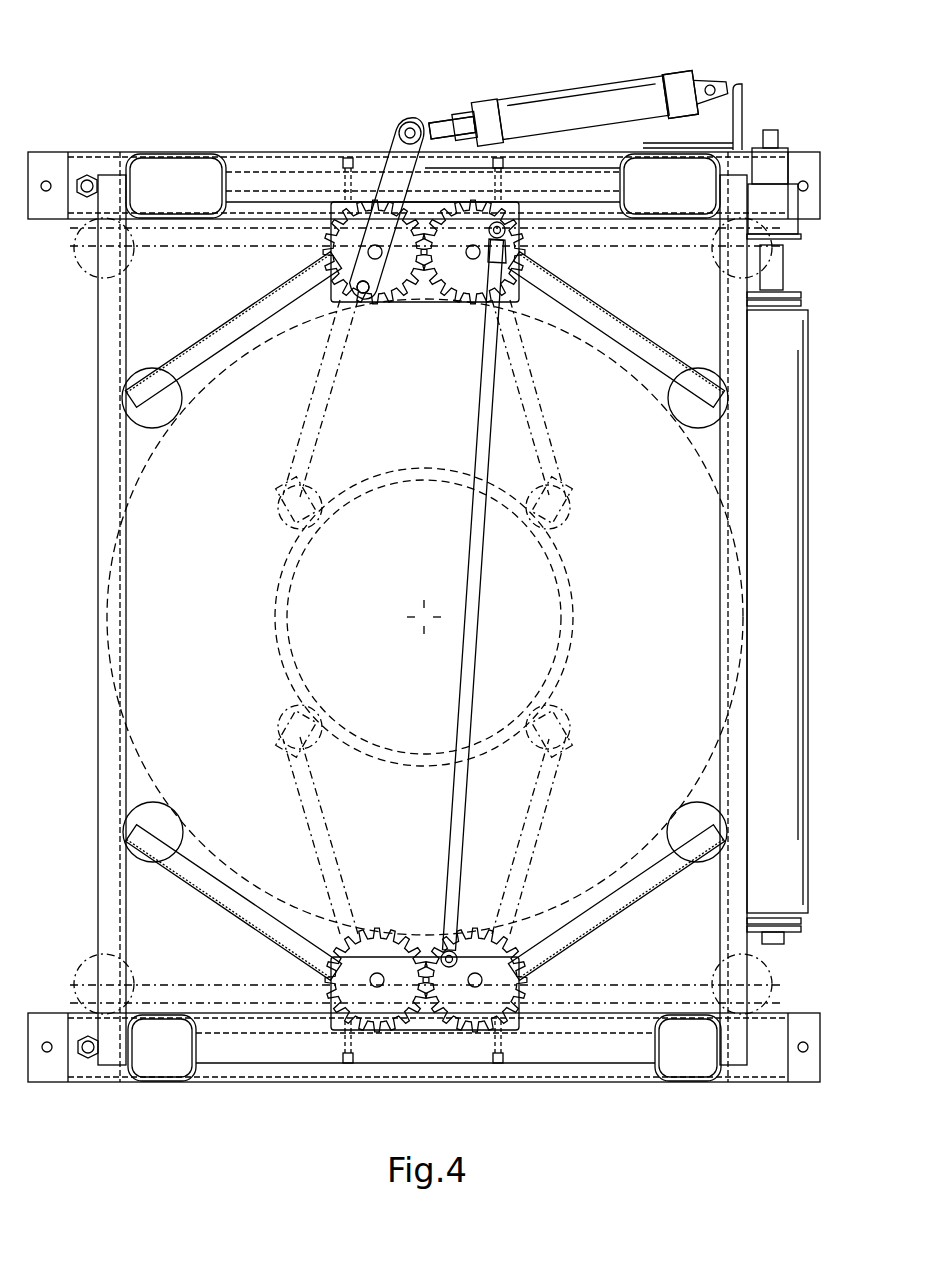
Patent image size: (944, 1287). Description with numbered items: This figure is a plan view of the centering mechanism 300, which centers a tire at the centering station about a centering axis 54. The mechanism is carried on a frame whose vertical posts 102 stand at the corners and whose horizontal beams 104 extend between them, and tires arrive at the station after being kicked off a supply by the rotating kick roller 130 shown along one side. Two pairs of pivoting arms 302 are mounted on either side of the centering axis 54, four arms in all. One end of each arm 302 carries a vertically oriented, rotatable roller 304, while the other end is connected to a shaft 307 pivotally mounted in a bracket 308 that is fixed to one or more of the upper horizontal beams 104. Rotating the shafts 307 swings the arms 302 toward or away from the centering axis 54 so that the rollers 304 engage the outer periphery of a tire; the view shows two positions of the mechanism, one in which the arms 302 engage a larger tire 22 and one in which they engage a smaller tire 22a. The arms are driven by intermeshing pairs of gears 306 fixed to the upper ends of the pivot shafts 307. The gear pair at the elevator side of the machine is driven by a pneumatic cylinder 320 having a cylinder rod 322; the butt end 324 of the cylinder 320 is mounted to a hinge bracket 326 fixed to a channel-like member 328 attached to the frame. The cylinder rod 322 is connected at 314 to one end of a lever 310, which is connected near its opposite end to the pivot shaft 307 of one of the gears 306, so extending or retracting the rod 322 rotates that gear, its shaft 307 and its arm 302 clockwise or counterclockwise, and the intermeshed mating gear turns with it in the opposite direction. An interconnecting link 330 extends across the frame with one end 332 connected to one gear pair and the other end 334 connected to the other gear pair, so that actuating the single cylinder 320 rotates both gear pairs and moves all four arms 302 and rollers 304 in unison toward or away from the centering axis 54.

The centering mechanism 300 is at (372, 60).
The tire 22 is at (425, 617).
The tire 22a is at (270, 625).
The centering axis 54 is at (422, 615).
The vertical posts 102 is at (180, 200).
The horizontal beams 104 is at (275, 190).
The kick roller 130 is at (790, 852).
The pivoting arms 302 is at (232, 330).
The rollers 304 is at (125, 405).
The gears 306 is at (445, 262).
The shaft 307 is at (372, 300).
The bracket 308 is at (395, 188).
The lever 310 is at (376, 228).
The connection 314 is at (416, 125).
The pneumatic cylinder 320 is at (612, 98).
The cylinder rod 322 is at (450, 124).
The butt end 324 is at (679, 86).
The hinge bracket 326 is at (740, 95).
The channel-like member 328 is at (738, 135).
The interconnecting link 330 is at (482, 405).
The end of interconnecting link 332 is at (510, 240).
The end of interconnecting link 334 is at (460, 945).